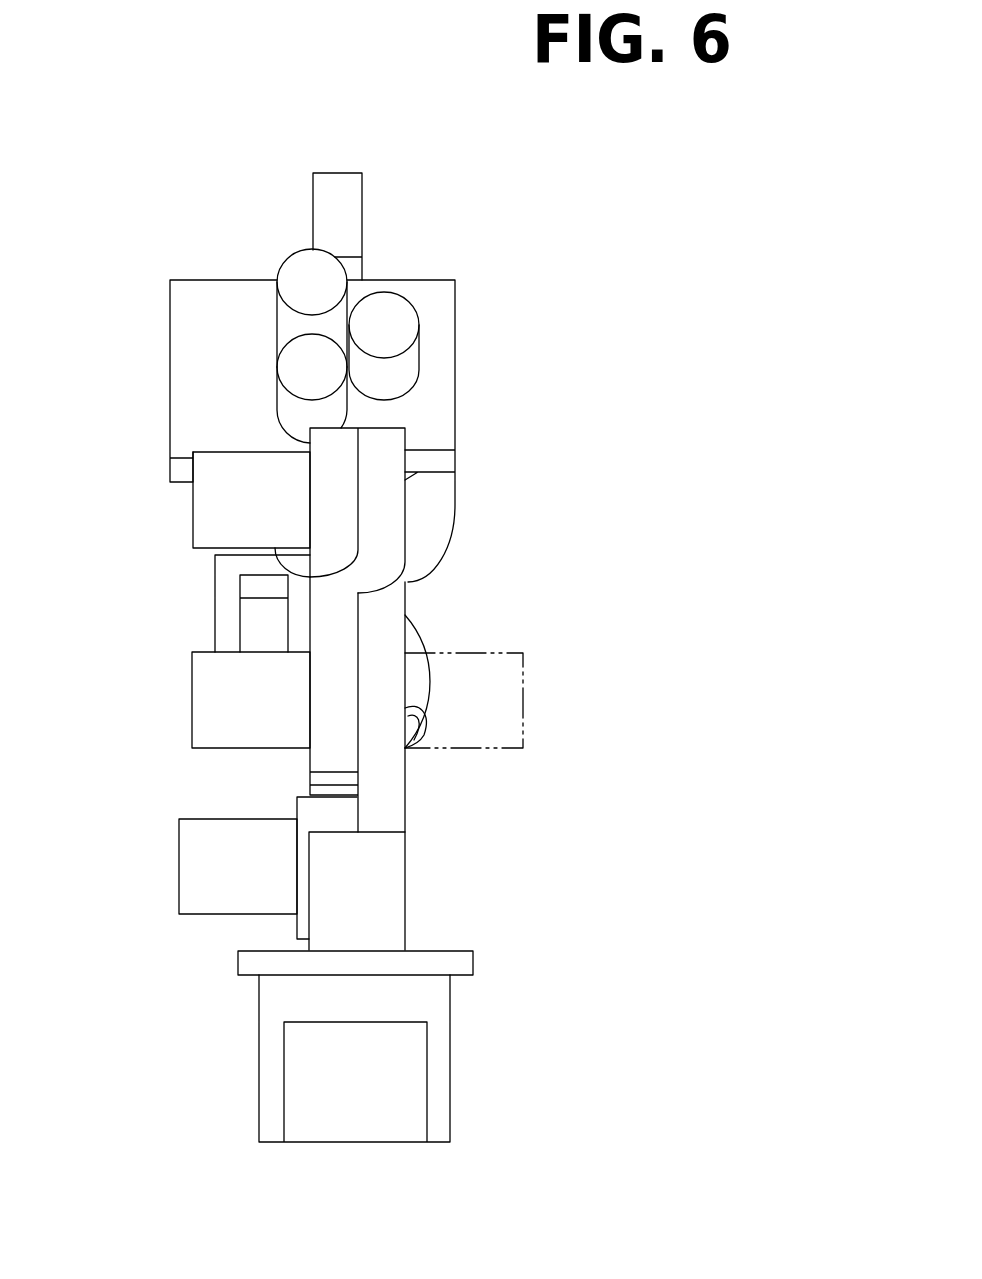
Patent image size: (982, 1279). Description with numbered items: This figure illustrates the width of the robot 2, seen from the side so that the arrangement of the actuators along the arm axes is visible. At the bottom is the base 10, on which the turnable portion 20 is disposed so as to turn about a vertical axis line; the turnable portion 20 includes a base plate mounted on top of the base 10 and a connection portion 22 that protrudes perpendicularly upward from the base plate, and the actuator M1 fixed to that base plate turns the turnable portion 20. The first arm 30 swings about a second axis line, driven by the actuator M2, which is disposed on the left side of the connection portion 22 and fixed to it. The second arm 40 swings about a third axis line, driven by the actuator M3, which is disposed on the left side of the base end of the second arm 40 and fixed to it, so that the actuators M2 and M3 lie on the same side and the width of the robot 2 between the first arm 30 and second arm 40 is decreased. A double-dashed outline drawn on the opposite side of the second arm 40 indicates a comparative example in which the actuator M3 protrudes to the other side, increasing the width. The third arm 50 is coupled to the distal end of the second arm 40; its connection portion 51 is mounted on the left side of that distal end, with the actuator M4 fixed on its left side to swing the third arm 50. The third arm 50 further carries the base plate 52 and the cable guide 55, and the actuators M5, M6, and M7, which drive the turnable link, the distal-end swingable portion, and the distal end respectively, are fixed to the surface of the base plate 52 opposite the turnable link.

The robot 2 is at (130, 150).
The base 10 is at (450, 1010).
The turnable portion 20 is at (495, 962).
The connection portion 22 is at (310, 810).
The first arm 30 is at (390, 785).
The second arm 40 is at (340, 618).
The third arm 50 is at (410, 229).
The connection portion 51 is at (340, 514).
The base plate 52 is at (438, 385).
The cable guide 55 is at (338, 193).
The actuator M1 is at (385, 890).
The actuator M2 is at (191, 867).
The actuator M3 is at (208, 697).
The actuator M4 is at (212, 510).
The actuator M5 is at (402, 325).
The actuator M6 is at (303, 277).
The actuator M7 is at (295, 367).